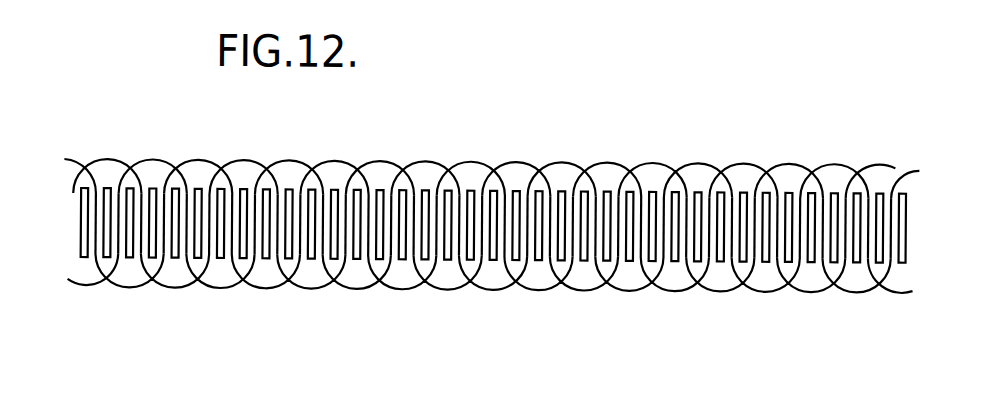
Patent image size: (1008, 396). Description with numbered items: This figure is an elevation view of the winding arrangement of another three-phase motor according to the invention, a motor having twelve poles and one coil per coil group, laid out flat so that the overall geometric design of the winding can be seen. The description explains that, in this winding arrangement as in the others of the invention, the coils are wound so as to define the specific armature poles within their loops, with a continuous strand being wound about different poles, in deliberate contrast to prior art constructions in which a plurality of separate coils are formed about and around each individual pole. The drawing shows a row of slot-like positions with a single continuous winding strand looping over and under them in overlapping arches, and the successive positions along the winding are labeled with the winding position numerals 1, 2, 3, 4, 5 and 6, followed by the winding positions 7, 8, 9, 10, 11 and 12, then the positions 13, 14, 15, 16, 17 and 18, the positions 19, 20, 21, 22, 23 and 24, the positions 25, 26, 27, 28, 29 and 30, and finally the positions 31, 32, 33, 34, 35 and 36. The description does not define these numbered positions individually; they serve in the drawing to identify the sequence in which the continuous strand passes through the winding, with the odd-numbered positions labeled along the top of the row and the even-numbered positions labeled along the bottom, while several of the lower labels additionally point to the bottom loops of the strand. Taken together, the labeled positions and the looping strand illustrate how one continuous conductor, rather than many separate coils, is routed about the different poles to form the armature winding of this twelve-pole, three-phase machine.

The coil side 1 is at (327, 190).
The coil side 2 is at (350, 258).
The coil side 3 is at (373, 190).
The coil side 4 is at (395, 190).
The coil side 5 is at (419, 190).
The coil side 6 is at (443, 258).
The coil side 7 is at (464, 190).
The coil side 8 is at (487, 257).
The coil side 9 is at (510, 190).
The coil side 10 is at (532, 258).
The coil side 11 is at (555, 190).
The coil side 12 is at (578, 258).
The coil side 13 is at (601, 190).
The coil side 14 is at (623, 258).
The coil side 15 is at (647, 190).
The coil side 16 is at (668, 258).
The coil side 17 is at (692, 190).
The coil side 18 is at (713, 258).
The coil side 19 is at (739, 190).
The coil side 20 is at (759, 258).
The coil side 21 is at (784, 190).
The coil side 22 is at (805, 258).
The coil side 23 is at (830, 190).
The coil side 24 is at (850, 258).
The coil side 25 is at (876, 190).
The coil side 26 is at (896, 258).
The coil side 27 is at (100, 190).
The coil side 28 is at (122, 256).
The coil side 29 is at (145, 190).
The coil side 30 is at (168, 256).
The coil side 31 is at (188, 190).
The coil side 32 is at (214, 256).
The coil side 33 is at (238, 190).
The coil side 34 is at (260, 257).
The coil side 35 is at (283, 190).
The coil side 36 is at (304, 261).